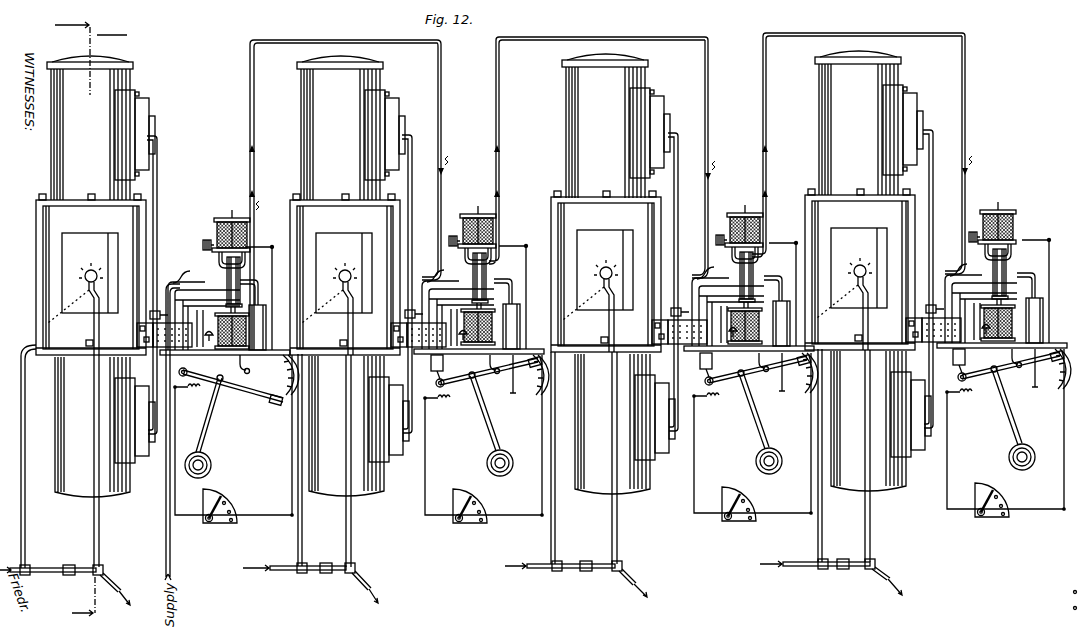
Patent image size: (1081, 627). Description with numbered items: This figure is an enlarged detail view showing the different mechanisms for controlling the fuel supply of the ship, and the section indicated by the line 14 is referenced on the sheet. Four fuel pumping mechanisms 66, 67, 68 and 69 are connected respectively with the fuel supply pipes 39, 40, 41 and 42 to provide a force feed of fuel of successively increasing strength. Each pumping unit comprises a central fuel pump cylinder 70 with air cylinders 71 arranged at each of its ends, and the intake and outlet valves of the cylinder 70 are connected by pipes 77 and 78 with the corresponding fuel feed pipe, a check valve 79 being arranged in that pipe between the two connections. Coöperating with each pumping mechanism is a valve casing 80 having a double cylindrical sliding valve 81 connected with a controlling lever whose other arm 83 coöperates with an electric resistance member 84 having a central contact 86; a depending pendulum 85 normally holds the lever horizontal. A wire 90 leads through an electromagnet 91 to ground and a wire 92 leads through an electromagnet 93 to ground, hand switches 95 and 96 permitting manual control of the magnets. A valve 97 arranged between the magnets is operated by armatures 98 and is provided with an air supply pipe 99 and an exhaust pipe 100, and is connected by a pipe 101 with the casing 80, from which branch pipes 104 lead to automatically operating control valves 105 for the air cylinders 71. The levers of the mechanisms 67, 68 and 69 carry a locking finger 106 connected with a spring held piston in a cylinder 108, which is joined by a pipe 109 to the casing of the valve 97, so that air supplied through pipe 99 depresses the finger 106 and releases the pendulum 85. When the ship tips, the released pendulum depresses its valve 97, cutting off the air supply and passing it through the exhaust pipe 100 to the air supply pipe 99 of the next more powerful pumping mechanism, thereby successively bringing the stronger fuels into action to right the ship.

The section line 14 is at (91, 324).
The fuel supply pipe 39 is at (38, 566).
The fuel supply pipe 40 is at (305, 590).
The fuel supply pipe 41 is at (565, 587).
The fuel supply pipe 42 is at (793, 583).
The fuel pumping mechanism 66 is at (164, 218).
The fuel pumping mechanism 67 is at (416, 210).
The fuel pumping mechanism 68 is at (684, 215).
The fuel pumping mechanism 69 is at (936, 267).
The fuel pump cylinder 70 is at (498, 272).
The air cylinder 71 is at (489, 274).
The pipe 77 is at (21, 493).
The pipe 78 is at (101, 520).
The check valve 79 is at (69, 565).
The valve casing 80 is at (180, 284).
The double cylindrical sliding valve 81 is at (691, 370).
The lever arm 83 is at (238, 388).
The electric resistance member 84 is at (275, 406).
The pendulum 85 is at (208, 441).
The central contact 86 is at (280, 376).
The wire 90 is at (290, 348).
The electromagnet 91 is at (247, 325).
The wire 92 is at (272, 303).
The electromagnet 93 is at (232, 218).
The hand switch 95 is at (245, 360).
The hand switch 96 is at (216, 516).
The valve 97 is at (242, 281).
The armature 98 is at (220, 254).
The air supply pipe 99 is at (443, 128).
The exhaust pipe 100 is at (250, 118).
The pipe 101 is at (200, 285).
The branch pipe 104 is at (159, 207).
The control valve 105 is at (680, 202).
The locking finger 106 is at (513, 400).
The cylinder 108 is at (520, 323).
The pipe 109 is at (514, 292).